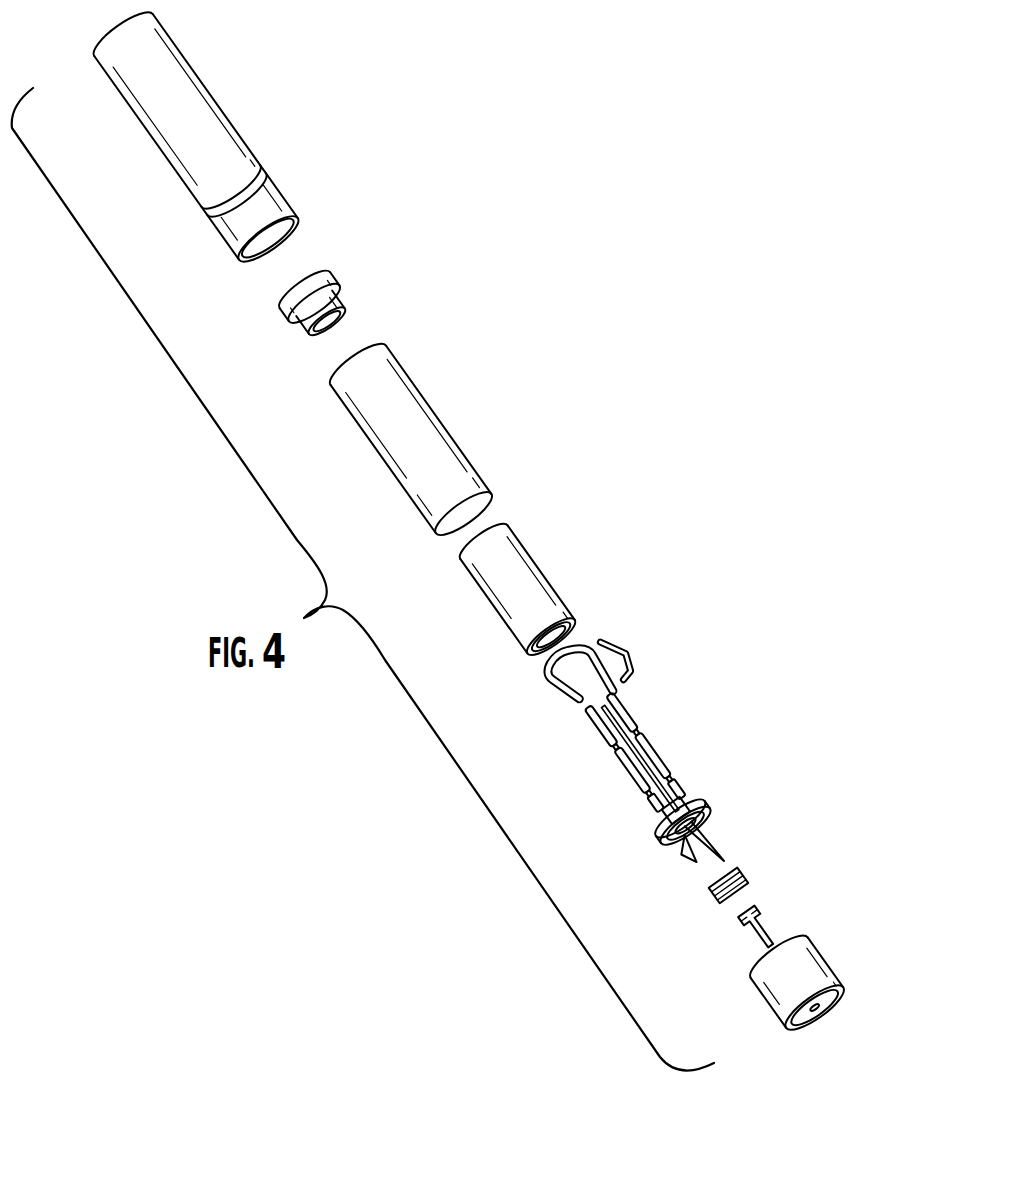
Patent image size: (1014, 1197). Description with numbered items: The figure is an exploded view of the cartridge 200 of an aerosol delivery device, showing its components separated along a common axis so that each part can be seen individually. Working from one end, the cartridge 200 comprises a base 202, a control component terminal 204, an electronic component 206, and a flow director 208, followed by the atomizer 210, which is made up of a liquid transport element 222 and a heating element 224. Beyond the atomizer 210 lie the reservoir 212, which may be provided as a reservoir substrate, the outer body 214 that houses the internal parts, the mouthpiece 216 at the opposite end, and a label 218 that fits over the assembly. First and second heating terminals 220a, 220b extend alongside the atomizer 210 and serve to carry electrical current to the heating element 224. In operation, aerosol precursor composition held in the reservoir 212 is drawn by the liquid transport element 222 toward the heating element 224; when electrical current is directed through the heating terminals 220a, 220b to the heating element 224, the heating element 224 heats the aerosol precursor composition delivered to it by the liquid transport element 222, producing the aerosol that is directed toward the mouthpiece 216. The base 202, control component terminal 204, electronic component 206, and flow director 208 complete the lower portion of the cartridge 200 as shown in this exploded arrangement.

The cartridge 200 is at (696, 280).
The base 202 is at (836, 947).
The control component terminal 204 is at (765, 912).
The electronic component 206 is at (748, 872).
The flow director 208 is at (645, 768).
The atomizer 210 is at (634, 736).
The reservoir 212 is at (545, 558).
The outer body 214 is at (440, 392).
The mouthpiece 216 is at (342, 278).
The label 218 is at (246, 145).
The first heating terminal 220a is at (630, 710).
The second heating terminal 220b is at (685, 858).
The liquid transport element 222 is at (634, 756).
The heating element 224 is at (545, 677).